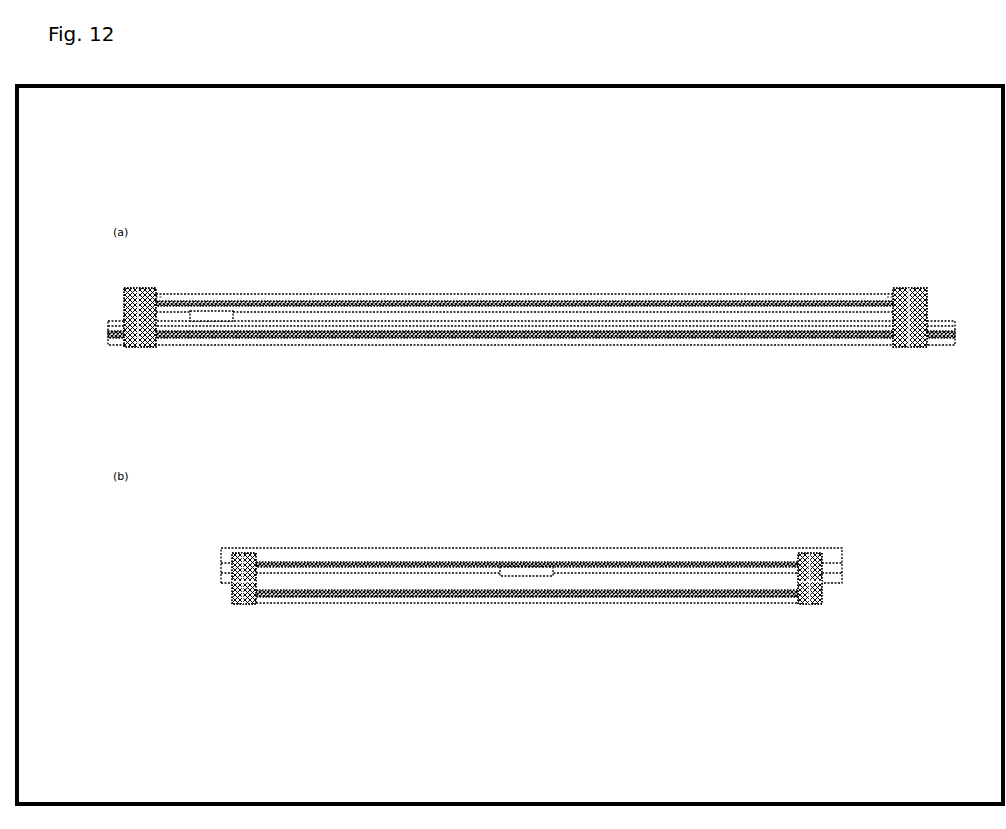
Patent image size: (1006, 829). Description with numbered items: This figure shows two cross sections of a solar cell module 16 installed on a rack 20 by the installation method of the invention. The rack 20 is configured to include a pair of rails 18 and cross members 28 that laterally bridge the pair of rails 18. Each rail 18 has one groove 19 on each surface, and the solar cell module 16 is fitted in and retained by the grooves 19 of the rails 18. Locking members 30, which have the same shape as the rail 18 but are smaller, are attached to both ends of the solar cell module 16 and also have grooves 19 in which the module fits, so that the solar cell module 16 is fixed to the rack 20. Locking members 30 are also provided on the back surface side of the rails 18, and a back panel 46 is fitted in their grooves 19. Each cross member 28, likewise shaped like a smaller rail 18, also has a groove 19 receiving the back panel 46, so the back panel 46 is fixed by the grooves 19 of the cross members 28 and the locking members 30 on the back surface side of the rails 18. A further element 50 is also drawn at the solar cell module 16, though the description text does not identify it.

The solar cell module 16 is at (640, 302).
The rail 18 is at (896, 290).
The groove 19 is at (160, 300).
The rack 20 is at (840, 549).
The cross member 28 is at (932, 346).
The locking member 30 is at (760, 295).
The back panel 46 is at (672, 334).
The sealing member 50 is at (210, 311).